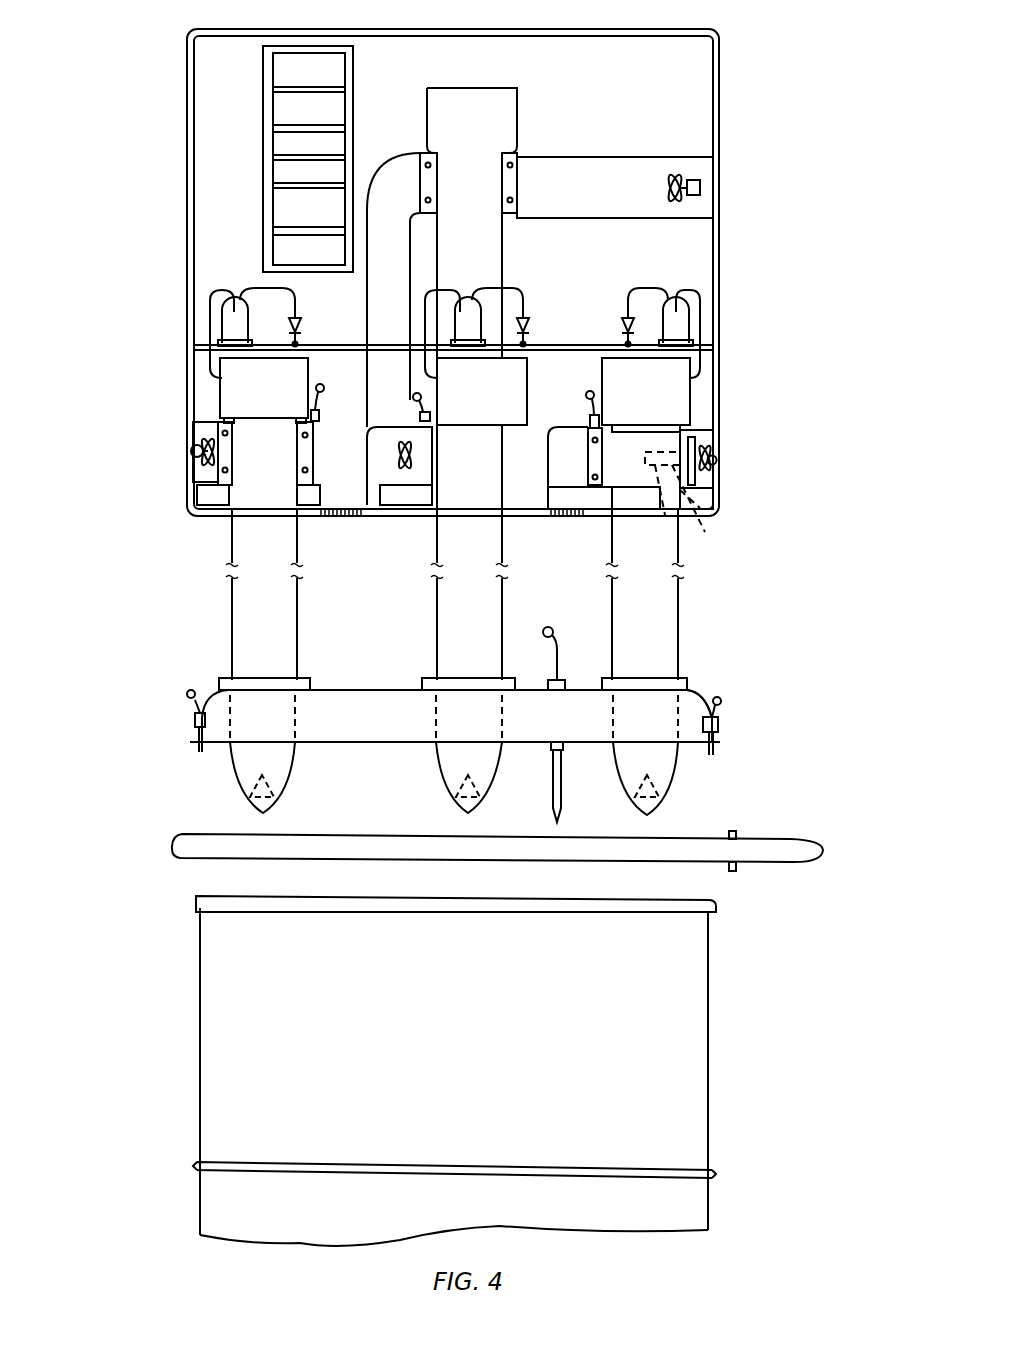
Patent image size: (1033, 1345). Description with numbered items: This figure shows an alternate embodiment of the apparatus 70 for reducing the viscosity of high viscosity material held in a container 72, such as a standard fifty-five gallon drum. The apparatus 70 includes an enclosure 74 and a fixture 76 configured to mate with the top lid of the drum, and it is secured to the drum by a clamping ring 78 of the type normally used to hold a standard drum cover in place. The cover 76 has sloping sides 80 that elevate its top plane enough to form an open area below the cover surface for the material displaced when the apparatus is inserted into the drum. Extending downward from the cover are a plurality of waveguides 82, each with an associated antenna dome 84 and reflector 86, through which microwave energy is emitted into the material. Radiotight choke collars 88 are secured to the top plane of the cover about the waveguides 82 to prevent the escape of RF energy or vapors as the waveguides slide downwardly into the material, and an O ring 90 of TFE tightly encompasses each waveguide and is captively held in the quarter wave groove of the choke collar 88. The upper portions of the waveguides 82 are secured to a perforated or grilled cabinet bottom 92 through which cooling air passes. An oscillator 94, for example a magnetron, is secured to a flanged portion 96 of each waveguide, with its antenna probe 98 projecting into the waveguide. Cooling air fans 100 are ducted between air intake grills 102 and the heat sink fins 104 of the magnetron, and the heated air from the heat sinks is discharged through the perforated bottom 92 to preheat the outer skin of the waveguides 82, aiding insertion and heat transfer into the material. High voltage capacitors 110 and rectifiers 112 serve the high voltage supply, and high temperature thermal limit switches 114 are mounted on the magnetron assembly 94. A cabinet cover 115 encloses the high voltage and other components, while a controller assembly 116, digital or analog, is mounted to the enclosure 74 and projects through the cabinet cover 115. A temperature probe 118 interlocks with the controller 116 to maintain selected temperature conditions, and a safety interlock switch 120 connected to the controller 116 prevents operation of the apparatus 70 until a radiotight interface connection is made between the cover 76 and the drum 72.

The apparatus 70 is at (782, 210).
The container 72 is at (200, 1008).
The enclosure 74 is at (718, 302).
The fixture 76 is at (727, 726).
The clamping ring 78 is at (172, 845).
The sloping sides 80 is at (713, 703).
The waveguides 82 is at (230, 533).
The antenna domes 84 is at (285, 768).
The reflectors 86 is at (250, 778).
The radiotight choke collars 88 is at (265, 678).
The O ring 90 is at (690, 690).
The perforated cabinet bottom 92 is at (353, 517).
The oscillator 94 is at (693, 437).
The flanged portion 96 is at (706, 493).
The antenna probe 98 is at (705, 532).
The cooling air fans 100 is at (190, 450).
The air intake grills 102 is at (193, 468).
The heat sink fins 104 is at (225, 420).
The high voltage capacitors 110 is at (231, 315).
The rectifiers 112 is at (300, 325).
The high temperature thermal limit switches 114 is at (319, 418).
The cabinet cover 115 is at (718, 102).
The controller assembly 116 is at (355, 82).
The temperature probe 118 is at (550, 775).
The safety interlock switch 120 is at (195, 718).